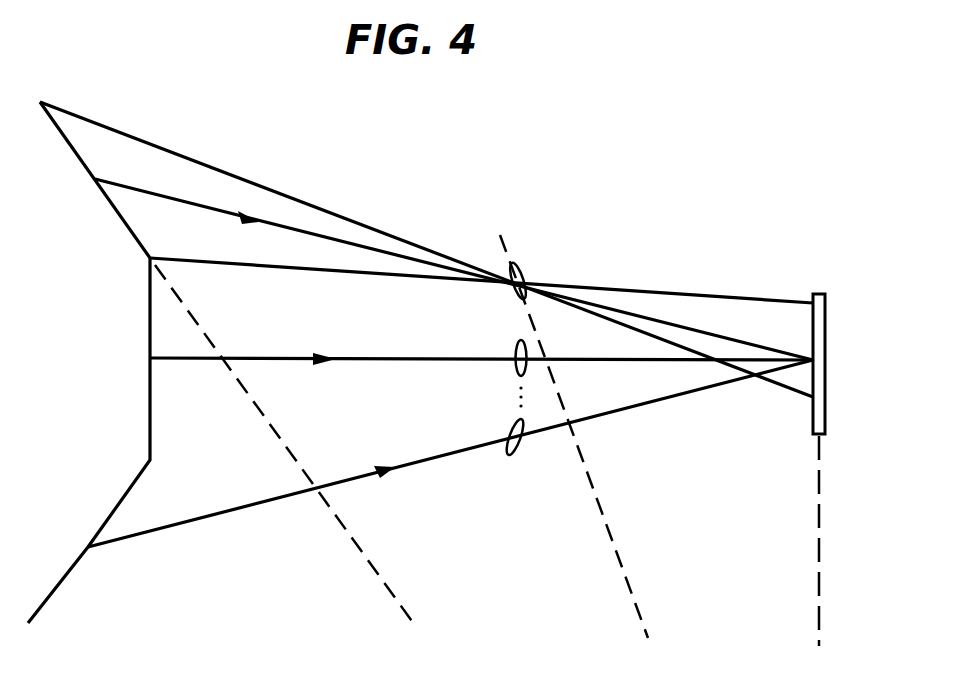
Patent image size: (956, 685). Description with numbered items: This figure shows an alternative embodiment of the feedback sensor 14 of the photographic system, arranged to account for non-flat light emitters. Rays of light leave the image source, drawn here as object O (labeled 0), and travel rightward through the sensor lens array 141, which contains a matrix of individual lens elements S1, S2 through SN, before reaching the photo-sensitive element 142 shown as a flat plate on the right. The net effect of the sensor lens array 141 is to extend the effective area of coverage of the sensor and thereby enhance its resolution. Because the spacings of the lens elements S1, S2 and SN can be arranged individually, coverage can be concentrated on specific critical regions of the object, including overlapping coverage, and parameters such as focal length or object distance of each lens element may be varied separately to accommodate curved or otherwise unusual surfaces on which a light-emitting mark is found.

The object 0 is at (89, 362).
The feedback sensor 14 is at (635, 348).
The sensor lens array 141 is at (499, 466).
The photo-sensitive element 142 is at (826, 368).
The lens element S1 is at (521, 264).
The lens element S2 is at (516, 348).
The lens element SN is at (511, 422).